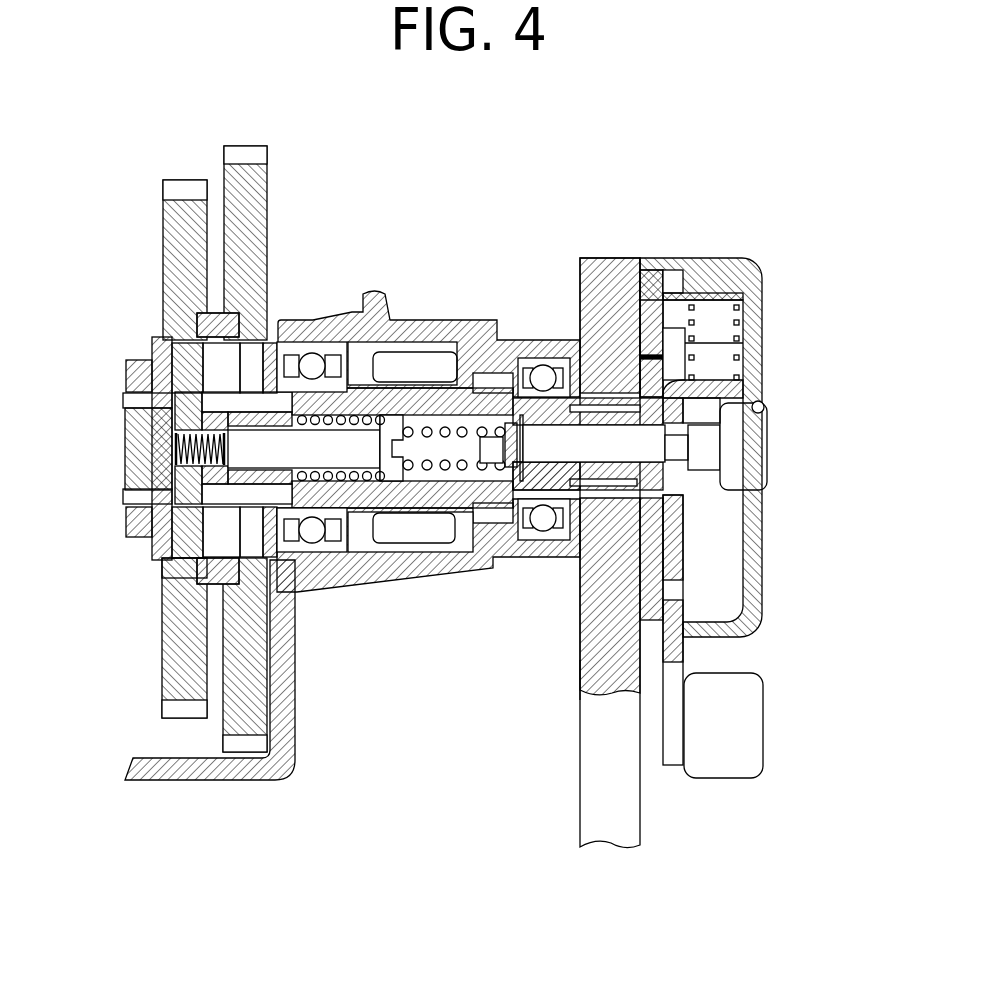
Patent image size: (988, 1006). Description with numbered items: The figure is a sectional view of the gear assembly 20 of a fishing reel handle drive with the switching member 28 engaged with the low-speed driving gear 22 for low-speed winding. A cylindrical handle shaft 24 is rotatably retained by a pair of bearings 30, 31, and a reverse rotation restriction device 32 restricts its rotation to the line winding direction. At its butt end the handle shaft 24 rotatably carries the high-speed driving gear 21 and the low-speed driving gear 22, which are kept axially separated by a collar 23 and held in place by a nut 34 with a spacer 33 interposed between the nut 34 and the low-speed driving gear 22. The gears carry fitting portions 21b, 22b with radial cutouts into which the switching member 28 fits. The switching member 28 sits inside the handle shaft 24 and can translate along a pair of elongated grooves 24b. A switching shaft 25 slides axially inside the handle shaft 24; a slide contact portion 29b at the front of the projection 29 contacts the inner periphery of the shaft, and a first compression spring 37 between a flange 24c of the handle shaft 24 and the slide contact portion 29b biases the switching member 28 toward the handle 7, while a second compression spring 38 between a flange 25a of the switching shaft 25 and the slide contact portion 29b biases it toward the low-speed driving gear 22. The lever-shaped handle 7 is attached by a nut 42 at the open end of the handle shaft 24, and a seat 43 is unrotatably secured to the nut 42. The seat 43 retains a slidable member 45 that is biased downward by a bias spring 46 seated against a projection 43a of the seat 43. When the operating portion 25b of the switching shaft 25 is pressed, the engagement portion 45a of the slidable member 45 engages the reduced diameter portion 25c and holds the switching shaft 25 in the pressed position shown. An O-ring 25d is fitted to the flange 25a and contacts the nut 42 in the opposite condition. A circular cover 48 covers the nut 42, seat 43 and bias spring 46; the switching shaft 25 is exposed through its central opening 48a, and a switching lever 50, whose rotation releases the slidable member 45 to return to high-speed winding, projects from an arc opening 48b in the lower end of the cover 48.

The handle 7 is at (587, 745).
The gear assembly 20 is at (221, 425).
The high-speed driving gear 21 is at (247, 158).
The fitting portion 21b is at (178, 562).
The low-speed driving gear 22 is at (180, 190).
The fitting portion 22b is at (185, 343).
The collar 23 is at (227, 313).
The handle shaft 24 is at (458, 388).
The elongated grooves 24b is at (247, 458).
The flange 24c is at (285, 552).
The switching shaft 25 is at (602, 437).
The flange 25a is at (515, 522).
The operating portion 25b is at (752, 433).
The reduced diameter portion 25c is at (685, 448).
The O-ring 25d is at (510, 420).
The switching member 28 is at (137, 430).
The projection 29 is at (185, 478).
The slide contact portion 29b is at (395, 415).
The bearing 30 is at (543, 365).
The bearing 31 is at (313, 362).
The reverse rotation restriction device 32 is at (417, 533).
The spacer 33 is at (155, 337).
The nut 34 is at (128, 362).
The compression spring 37 is at (343, 552).
The compression spring 38 is at (488, 465).
The nut 42 is at (655, 285).
The seat 43 is at (648, 365).
The projection 43a is at (712, 290).
The slidable member 45 is at (680, 525).
The engagement portion 45a is at (713, 380).
The bias spring 46 is at (740, 322).
The circular cover 48 is at (740, 262).
The opening 48a is at (765, 405).
The arc opening 48b is at (580, 683).
The switching lever 50 is at (742, 722).